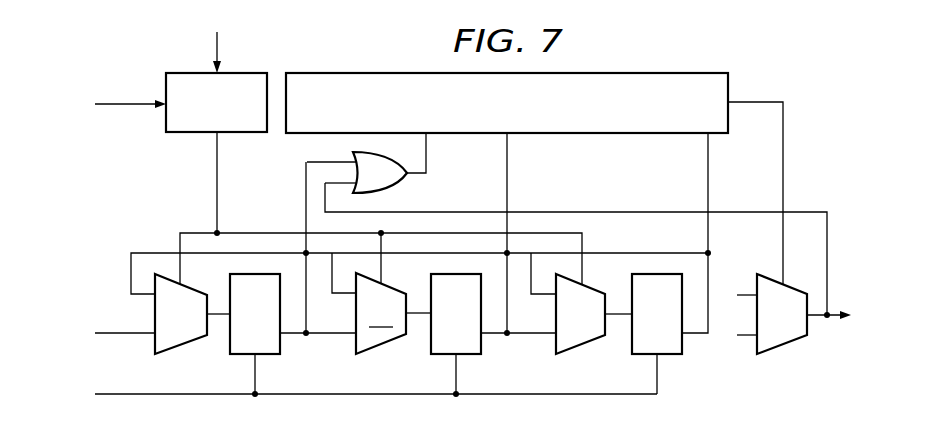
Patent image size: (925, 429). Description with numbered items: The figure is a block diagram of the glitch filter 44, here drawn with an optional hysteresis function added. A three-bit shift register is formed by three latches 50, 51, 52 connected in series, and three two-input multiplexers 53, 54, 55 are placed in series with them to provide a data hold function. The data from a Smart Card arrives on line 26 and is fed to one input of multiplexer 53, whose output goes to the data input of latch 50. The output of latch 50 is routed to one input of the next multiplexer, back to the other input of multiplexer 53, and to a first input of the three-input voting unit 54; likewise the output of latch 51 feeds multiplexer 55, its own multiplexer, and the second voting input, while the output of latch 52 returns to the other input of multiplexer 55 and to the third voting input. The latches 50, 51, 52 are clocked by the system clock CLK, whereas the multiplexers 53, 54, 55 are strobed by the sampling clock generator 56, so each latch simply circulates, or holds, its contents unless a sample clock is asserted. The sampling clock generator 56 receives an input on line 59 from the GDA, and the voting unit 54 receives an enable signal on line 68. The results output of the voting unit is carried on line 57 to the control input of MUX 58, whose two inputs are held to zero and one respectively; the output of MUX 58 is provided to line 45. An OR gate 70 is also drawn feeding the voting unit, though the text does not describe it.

The line 26 is at (120, 332).
The glitch filter 44 is at (768, 66).
The line 45 is at (820, 320).
The latch 50 is at (267, 327).
The latch 51 is at (468, 327).
The latch 52 is at (669, 327).
The multiplexer 53 is at (193, 327).
The voting unit 54 is at (637, 72).
The multiplexer 55 is at (593, 327).
The sampling clock generator 56 is at (237, 73).
The line 57 is at (783, 173).
The MUX 58 is at (794, 327).
The line 59 is at (125, 100).
The line 68 is at (213, 49).
The OR gate 70 is at (405, 180).